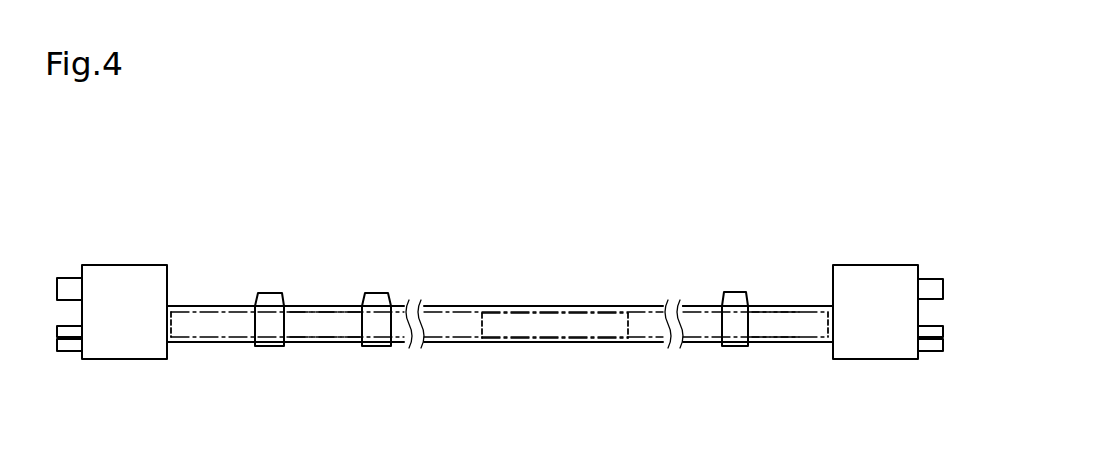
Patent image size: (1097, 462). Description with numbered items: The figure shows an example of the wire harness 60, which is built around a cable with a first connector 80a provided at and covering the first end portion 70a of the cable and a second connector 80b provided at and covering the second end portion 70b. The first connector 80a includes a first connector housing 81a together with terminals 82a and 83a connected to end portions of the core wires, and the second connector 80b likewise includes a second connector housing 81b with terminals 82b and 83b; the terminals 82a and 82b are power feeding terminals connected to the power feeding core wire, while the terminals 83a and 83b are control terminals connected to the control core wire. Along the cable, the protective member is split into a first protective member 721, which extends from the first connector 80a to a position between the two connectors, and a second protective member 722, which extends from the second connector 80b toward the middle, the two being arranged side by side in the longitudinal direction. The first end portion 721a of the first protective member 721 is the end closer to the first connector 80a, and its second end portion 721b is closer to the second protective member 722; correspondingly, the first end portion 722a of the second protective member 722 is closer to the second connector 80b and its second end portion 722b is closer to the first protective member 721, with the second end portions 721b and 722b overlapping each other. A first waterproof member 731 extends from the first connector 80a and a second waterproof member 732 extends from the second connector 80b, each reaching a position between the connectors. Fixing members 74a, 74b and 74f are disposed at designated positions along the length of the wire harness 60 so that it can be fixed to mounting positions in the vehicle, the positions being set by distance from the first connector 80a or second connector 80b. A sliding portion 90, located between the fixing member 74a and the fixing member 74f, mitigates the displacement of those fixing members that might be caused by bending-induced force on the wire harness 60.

The wire harness 60 is at (516, 177).
The first end portion of the cable 70a is at (174, 296).
The second end portion of the cable 70b is at (827, 299).
The first protective member 721 is at (295, 306).
The second protective member 722 is at (767, 307).
The first end portion of the first protective member 721a is at (168, 325).
The second end portion of the first protective member 721b is at (628, 323).
The first end portion of the second protective member 722a is at (833, 324).
The second end portion of the second protective member 722b is at (482, 325).
The first waterproof member 731 is at (212, 306).
The second waterproof member 732 is at (700, 307).
The fixing member 74a is at (267, 350).
The fixing member 74b is at (372, 350).
The fixing member 74f is at (733, 347).
The first connector 80a is at (131, 195).
The second connector 80b is at (872, 210).
The first connector housing 81a is at (130, 360).
The second connector housing 81b is at (870, 360).
The terminal 82a is at (66, 368).
The terminal 82b is at (933, 370).
The terminal 83a is at (70, 277).
The terminal 83b is at (937, 278).
The sliding portion 90 is at (549, 280).